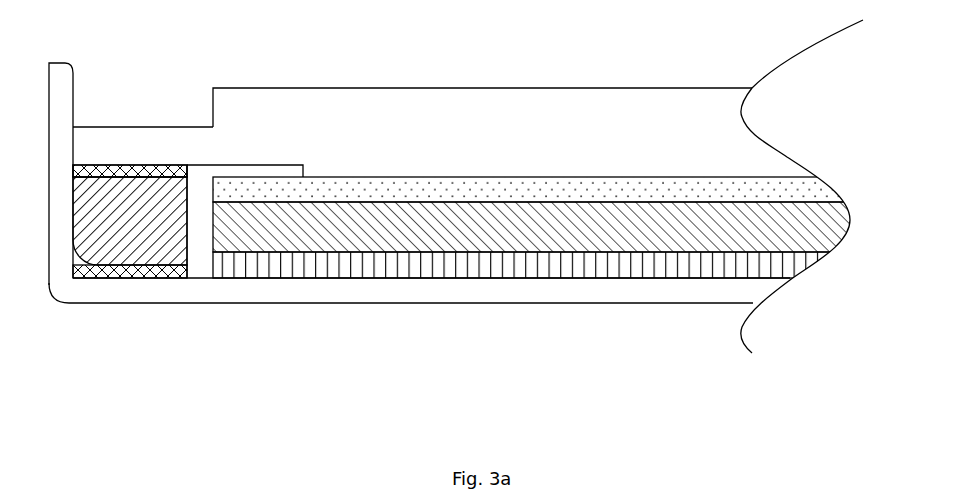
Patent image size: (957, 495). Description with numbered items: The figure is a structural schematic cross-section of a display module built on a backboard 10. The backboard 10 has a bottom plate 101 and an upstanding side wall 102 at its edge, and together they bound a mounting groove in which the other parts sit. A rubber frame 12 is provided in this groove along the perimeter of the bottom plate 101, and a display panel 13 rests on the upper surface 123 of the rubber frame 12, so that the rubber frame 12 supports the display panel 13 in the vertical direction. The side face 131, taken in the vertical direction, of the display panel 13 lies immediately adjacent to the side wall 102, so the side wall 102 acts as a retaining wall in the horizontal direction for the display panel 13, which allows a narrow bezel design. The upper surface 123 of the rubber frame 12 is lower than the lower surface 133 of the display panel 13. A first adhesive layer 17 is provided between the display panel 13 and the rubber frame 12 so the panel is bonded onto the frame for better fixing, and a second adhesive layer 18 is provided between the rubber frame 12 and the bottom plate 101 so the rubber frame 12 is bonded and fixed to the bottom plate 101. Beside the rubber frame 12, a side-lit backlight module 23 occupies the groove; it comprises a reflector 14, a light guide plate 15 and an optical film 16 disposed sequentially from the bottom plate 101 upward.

The backboard 10 is at (419, 198).
The bottom plate 101 is at (638, 292).
The side wall 102 is at (59, 85).
The rubber frame 12 is at (145, 243).
The display panel 13 is at (468, 186).
The side face in vertical direction of display panel 131 is at (75, 148).
The lower surface of display panel 133 is at (245, 162).
The reflector 14 is at (448, 360).
The light guide plate 15 is at (318, 240).
The optical film 16 is at (372, 190).
The first adhesive layer 17 is at (181, 94).
The second adhesive layer 18 is at (130, 274).
The upper surface of rubber frame 123 is at (142, 175).
The backlight module 23 is at (533, 293).